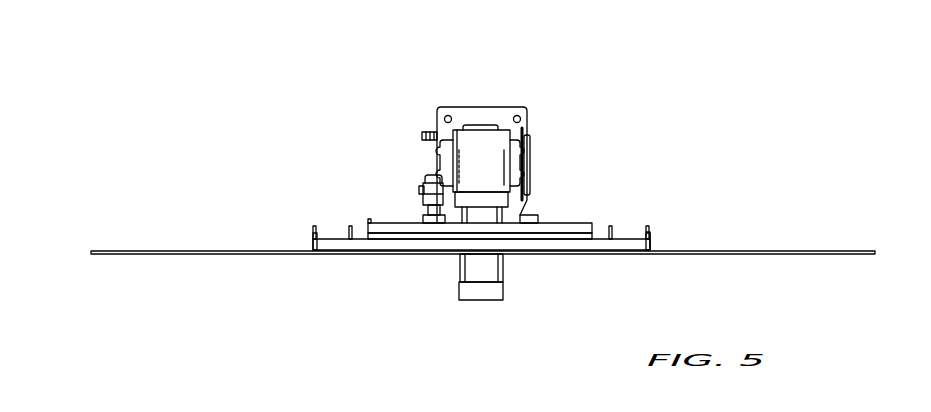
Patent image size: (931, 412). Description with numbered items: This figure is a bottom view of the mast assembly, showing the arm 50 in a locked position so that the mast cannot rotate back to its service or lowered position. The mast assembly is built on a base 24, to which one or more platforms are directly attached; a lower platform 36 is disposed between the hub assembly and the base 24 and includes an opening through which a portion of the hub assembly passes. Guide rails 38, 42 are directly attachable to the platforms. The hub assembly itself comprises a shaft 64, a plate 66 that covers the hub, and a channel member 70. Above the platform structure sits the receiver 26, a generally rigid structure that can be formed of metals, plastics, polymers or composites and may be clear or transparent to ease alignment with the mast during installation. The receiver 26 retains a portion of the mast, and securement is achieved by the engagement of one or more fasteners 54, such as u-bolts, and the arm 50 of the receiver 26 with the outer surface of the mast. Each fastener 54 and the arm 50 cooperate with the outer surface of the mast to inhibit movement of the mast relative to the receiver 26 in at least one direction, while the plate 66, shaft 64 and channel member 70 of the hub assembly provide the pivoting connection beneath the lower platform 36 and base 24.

The base 24 is at (202, 252).
The receiver 26 is at (478, 107).
The lower platform 36 is at (652, 243).
The guide rail 38 is at (638, 236).
The guide rail 42 is at (333, 236).
The arm 50 is at (528, 148).
The fastener 54 is at (418, 135).
The shaft 64 is at (460, 280).
The plate 66 is at (580, 222).
The channel member 70 is at (390, 233).